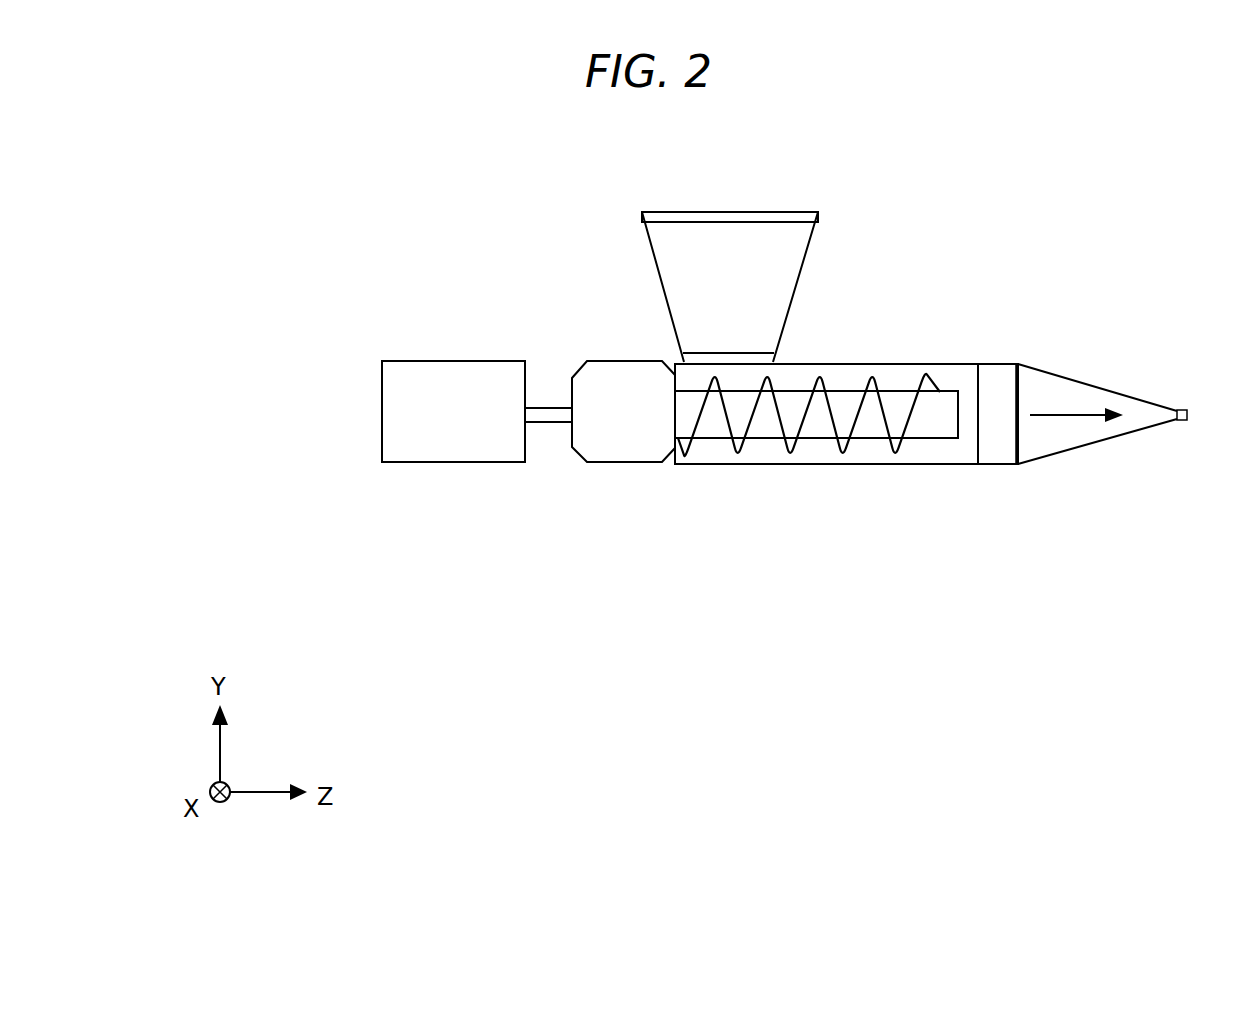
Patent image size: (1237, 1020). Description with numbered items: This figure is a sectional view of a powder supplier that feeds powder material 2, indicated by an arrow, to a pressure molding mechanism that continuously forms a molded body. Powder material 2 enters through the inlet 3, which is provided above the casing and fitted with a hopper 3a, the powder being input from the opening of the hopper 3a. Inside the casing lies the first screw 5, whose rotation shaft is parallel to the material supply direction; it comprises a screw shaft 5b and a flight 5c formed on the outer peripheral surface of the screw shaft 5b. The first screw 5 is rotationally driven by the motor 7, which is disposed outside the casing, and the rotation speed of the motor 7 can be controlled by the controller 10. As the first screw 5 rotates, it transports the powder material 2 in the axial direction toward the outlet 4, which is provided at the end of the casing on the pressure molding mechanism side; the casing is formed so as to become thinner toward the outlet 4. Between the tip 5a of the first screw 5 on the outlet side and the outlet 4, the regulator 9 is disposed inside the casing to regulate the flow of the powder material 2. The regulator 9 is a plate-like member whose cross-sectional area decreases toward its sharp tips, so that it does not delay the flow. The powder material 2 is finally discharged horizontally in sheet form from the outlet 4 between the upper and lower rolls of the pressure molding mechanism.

The powder material 2 is at (1070, 413).
The inlet 3 is at (773, 362).
The hopper 3a is at (653, 258).
The outlet 4 is at (1183, 420).
The first screw 5 is at (952, 568).
The tip of first screw 5a is at (960, 417).
The screw shaft 5b is at (867, 412).
The flight 5c is at (890, 438).
The motor 7 is at (620, 437).
The regulator 9 is at (992, 448).
The controller 10 is at (455, 462).